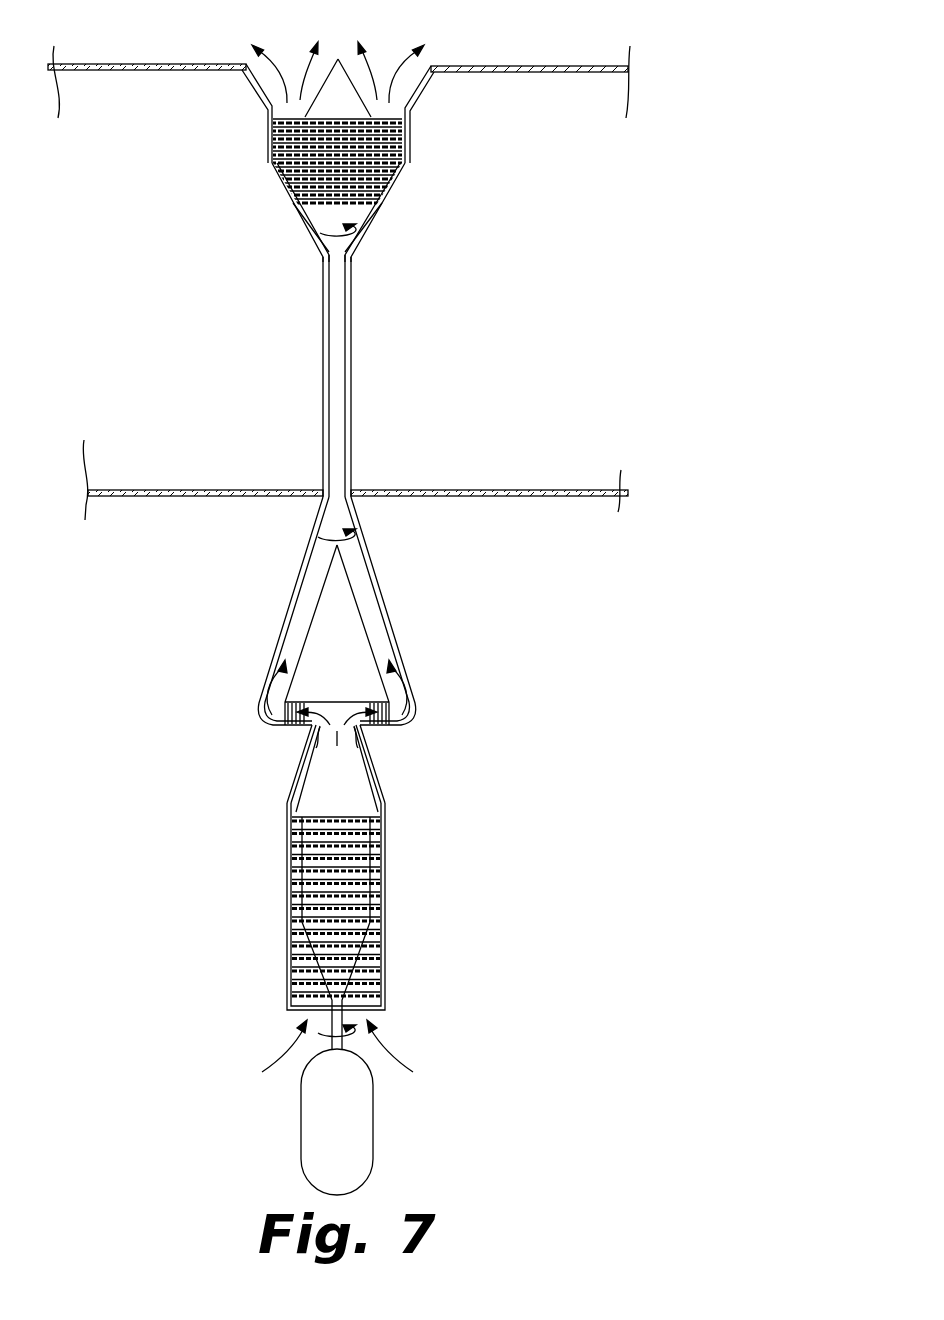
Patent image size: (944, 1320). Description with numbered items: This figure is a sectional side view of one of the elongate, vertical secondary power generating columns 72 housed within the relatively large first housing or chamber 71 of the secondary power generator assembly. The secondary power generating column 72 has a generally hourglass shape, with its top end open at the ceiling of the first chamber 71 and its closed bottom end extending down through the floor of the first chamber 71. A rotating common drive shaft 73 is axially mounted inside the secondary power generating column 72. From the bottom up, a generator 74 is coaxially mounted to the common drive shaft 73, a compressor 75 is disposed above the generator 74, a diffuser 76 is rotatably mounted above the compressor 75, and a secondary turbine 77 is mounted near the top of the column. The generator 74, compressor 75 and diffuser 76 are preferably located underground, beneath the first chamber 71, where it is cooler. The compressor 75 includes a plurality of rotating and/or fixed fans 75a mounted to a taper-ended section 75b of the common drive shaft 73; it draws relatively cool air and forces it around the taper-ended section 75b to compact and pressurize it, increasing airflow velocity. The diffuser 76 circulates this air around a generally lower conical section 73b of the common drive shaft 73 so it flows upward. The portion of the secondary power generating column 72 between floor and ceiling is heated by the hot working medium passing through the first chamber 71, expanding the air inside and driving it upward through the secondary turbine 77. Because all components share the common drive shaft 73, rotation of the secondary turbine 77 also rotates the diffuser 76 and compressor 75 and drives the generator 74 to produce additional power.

The first housing or chamber 71 is at (535, 66).
The secondary power generating column 72 is at (358, 215).
The common drive shaft 73 is at (353, 453).
The lower conical section 73b is at (358, 603).
The generator 74 is at (373, 1145).
The compressor 75 is at (377, 788).
The fans 75a is at (368, 913).
The taper-ended section 75b is at (348, 768).
The diffuser 76 is at (337, 746).
The secondary turbine 77 is at (281, 176).